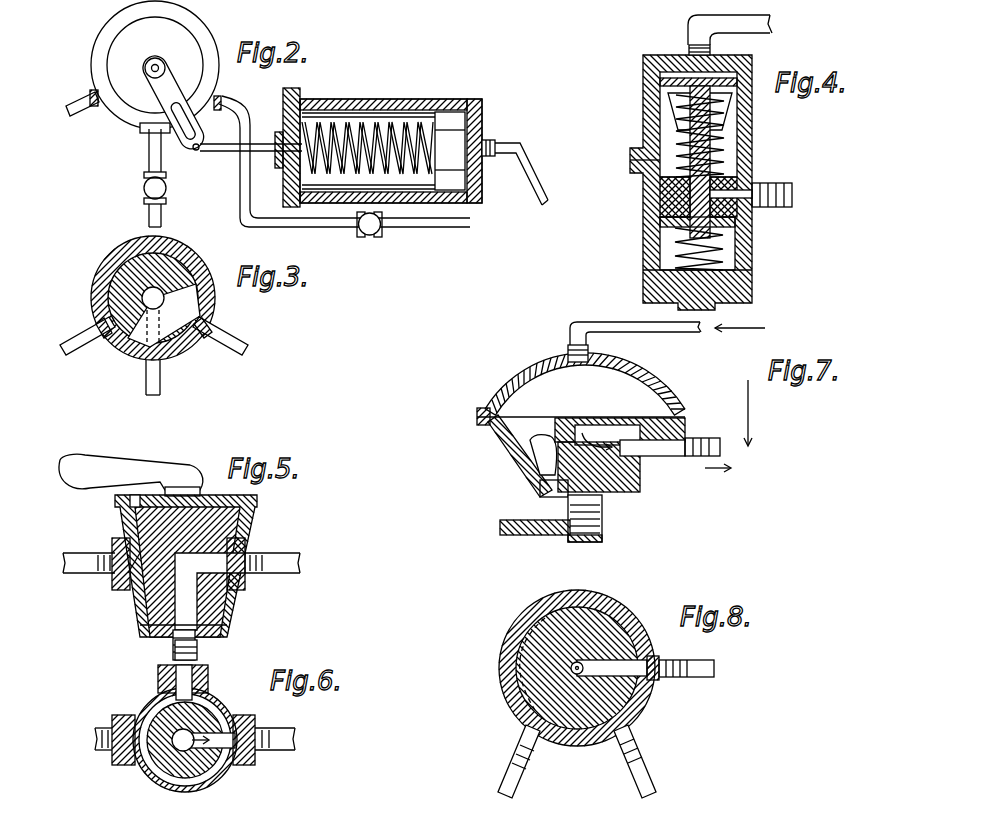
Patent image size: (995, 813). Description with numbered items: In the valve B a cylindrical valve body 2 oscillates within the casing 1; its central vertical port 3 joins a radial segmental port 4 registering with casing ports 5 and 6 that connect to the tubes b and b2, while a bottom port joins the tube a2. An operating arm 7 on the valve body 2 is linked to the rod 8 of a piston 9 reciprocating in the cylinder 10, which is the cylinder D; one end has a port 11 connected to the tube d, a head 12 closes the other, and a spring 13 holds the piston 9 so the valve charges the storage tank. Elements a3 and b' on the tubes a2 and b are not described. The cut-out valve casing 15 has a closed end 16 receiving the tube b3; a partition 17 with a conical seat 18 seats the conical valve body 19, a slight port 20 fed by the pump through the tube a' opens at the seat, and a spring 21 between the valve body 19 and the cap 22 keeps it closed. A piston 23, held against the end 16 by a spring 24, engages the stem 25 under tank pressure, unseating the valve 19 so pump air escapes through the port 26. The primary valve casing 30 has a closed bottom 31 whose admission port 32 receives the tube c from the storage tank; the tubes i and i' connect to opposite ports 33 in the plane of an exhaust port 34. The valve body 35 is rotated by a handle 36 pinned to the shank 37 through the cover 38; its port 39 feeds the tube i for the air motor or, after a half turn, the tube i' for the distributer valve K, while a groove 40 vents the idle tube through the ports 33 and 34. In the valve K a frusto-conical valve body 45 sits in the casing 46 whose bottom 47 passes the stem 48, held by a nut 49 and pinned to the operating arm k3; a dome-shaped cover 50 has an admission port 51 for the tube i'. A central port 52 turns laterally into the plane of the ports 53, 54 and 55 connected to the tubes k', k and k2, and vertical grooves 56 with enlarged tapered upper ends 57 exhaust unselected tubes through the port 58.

In FIG. 2, the valve B is at (200, 32).
In FIG. 3, the valve B is at (190, 262).
In FIG. 7, the valve B is at (725, 452).
In FIG. 2, the casing 1 is at (120, 118).
In FIG. 3, the casing 1 is at (118, 262).
In FIG. 3, the cylindrical valve body 2 is at (125, 343).
In FIG. 3, the central vertical port 3 is at (143, 296).
In FIG. 3, the radial segmental port 4 is at (175, 312).
In FIG. 3, the port 5 is at (205, 340).
In FIG. 3, the port 6 is at (108, 310).
In FIG. 2, the operating arm 7 is at (175, 90).
In FIG. 2, the rod 8 is at (258, 144).
In FIG. 7, the rod 8 is at (495, 438).
In FIG. 2, the piston 9 is at (450, 118).
In FIG. 2, the cylinder 10 is at (385, 102).
In FIG. 2, the port 11 is at (494, 140).
In FIG. 2, the head 12 is at (288, 160).
In FIG. 2, the spring 13 is at (405, 160).
In FIG. 4, the cylindrical casing 15 is at (752, 122).
In FIG. 4, the closed end 16 is at (712, 52).
In FIG. 4, the partition 17 is at (660, 196).
In FIG. 4, the conical seat 18 is at (660, 208).
In FIG. 4, the valve body 19 is at (737, 222).
In FIG. 4, the port 20 is at (745, 192).
In FIG. 4, the spring 21 is at (737, 255).
In FIG. 4, the cap 22 is at (752, 290).
In FIG. 4, the piston 23 is at (660, 80).
In FIG. 4, the spring 24 is at (725, 155).
In FIG. 4, the stem 25 is at (690, 135).
In FIG. 4, the port 26 is at (630, 165).
In FIG. 5, the cylindrical casing 30 is at (250, 530).
In FIG. 6, the cylindrical casing 30 is at (232, 708).
In FIG. 5, the closed bottom 31 is at (150, 634).
In FIG. 5, the admission port 32 is at (196, 645).
In FIG. 5, the ports 33 is at (112, 548).
In FIG. 6, the ports 33 is at (122, 765).
In FIG. 6, the exhaust port 34 is at (208, 676).
In FIG. 5, the valve body 35 is at (240, 518).
In FIG. 6, the valve body 35 is at (215, 772).
In FIG. 5, the handle 36 is at (140, 465).
In FIG. 5, the shank 37 is at (200, 492).
In FIG. 5, the cover 38 is at (128, 501).
In FIG. 5, the port 39 is at (200, 600).
In FIG. 6, the port 39 is at (240, 752).
In FIG. 5, the groove 40 is at (140, 595).
In FIG. 6, the groove 40 is at (155, 770).
In FIG. 7, the frusto-conical valve body 45 is at (535, 420).
In FIG. 7, the casing 46 is at (500, 440).
In FIG. 8, the casing 46 is at (600, 612).
In FIG. 7, the bottom 47 is at (604, 500).
In FIG. 7, the stem 48 is at (596, 542).
In FIG. 7, the nut 49 is at (604, 520).
In FIG. 7, the dome-shaped cover 50 is at (632, 392).
In FIG. 7, the central admission port 51 is at (568, 350).
In FIG. 7, the central port 52 is at (582, 424).
In FIG. 8, the central port 52 is at (615, 668).
In FIG. 7, the port 53 is at (655, 458).
In FIG. 8, the port 53 is at (655, 676).
In FIG. 8, the port 54 is at (632, 725).
In FIG. 8, the port 55 is at (575, 745).
In FIG. 7, the vertical grooves 56 is at (540, 470).
In FIG. 8, the vertical grooves 56 is at (520, 655).
In FIG. 7, the enlarged upper ends 57 is at (515, 447).
In FIG. 8, the enlarged upper ends 57 is at (560, 612).
In FIG. 7, the port 58 is at (555, 497).
In FIG. 2, the cylinder D is at (391, 138).
In FIG. 7, the distributer valve K is at (581, 384).
In FIG. 8, the distributer valve K is at (571, 664).
In FIG. 2, the tube a2 is at (149, 152).
In FIG. 3, the tube a2 is at (161, 382).
In FIG. 2, the valve a3 is at (143, 188).
In FIG. 4, the tube a' is at (788, 201).
In FIG. 2, the tube b is at (341, 173).
In FIG. 3, the tube b is at (226, 336).
In FIG. 2, the valve b' is at (373, 237).
In FIG. 2, the tube b2 is at (80, 104).
In FIG. 3, the tube b2 is at (85, 335).
In FIG. 4, the tube b3 is at (772, 26).
In FIG. 5, the tube c is at (173, 650).
In FIG. 6, the tube c is at (175, 648).
In FIG. 2, the tube d is at (521, 166).
In FIG. 5, the tube i is at (272, 575).
In FIG. 6, the tube i is at (275, 726).
In FIG. 7, the tube i' is at (667, 338).
In FIG. 5, the tube i' is at (89, 577).
In FIG. 6, the tube i' is at (92, 723).
In FIG. 8, the tube k is at (642, 757).
In FIG. 7, the tube k' is at (708, 442).
In FIG. 8, the tube k' is at (694, 682).
In FIG. 8, the tube k2 is at (515, 792).
In FIG. 7, the operating arm k3 is at (525, 536).